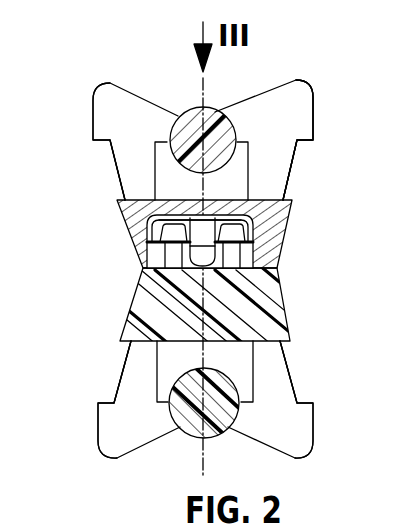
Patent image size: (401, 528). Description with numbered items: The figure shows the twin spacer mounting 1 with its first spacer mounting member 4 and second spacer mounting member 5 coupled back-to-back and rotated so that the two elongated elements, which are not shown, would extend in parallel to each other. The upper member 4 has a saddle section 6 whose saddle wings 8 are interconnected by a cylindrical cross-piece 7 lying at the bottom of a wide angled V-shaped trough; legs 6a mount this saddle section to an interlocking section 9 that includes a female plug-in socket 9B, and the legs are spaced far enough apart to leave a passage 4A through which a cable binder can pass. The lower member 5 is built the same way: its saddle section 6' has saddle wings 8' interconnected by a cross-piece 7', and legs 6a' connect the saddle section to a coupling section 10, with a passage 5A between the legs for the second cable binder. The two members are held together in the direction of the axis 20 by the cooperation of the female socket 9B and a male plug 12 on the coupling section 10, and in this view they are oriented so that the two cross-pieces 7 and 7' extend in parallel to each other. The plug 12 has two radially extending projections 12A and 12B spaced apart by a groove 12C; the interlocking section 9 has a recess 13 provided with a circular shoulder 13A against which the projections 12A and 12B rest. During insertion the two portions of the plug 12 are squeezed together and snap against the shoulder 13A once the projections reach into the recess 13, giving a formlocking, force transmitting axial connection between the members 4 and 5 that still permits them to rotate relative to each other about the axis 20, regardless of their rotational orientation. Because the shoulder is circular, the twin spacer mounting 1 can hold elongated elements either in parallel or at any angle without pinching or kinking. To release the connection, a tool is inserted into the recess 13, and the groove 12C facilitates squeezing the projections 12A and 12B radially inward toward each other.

The twin spacer mounting 1 is at (333, 122).
The first spacer mounting member 4 is at (140, 84).
The passage 4A is at (165, 178).
The second spacer mounting member 5 is at (130, 468).
The passage 5A is at (172, 352).
The saddle section 6 is at (81, 141).
The saddle section 6' is at (86, 399).
The legs 6a is at (202, 170).
The legs 6a' is at (196, 373).
The cross-piece 7 is at (214, 116).
The cross-piece 7' is at (207, 418).
The saddle wings 8 is at (304, 128).
The saddle wings 8' is at (312, 406).
The interlocking section 9 is at (113, 218).
The female plug-in socket 9B is at (256, 251).
The coupling section 10 is at (130, 318).
The male plug 12 is at (256, 268).
The radially extending projection 12A is at (142, 244).
The radially extending projection 12B is at (252, 240).
The groove 12C is at (218, 212).
The recess 13 is at (285, 205).
The circular shoulder 13A is at (140, 264).
The axis 20 is at (220, 328).